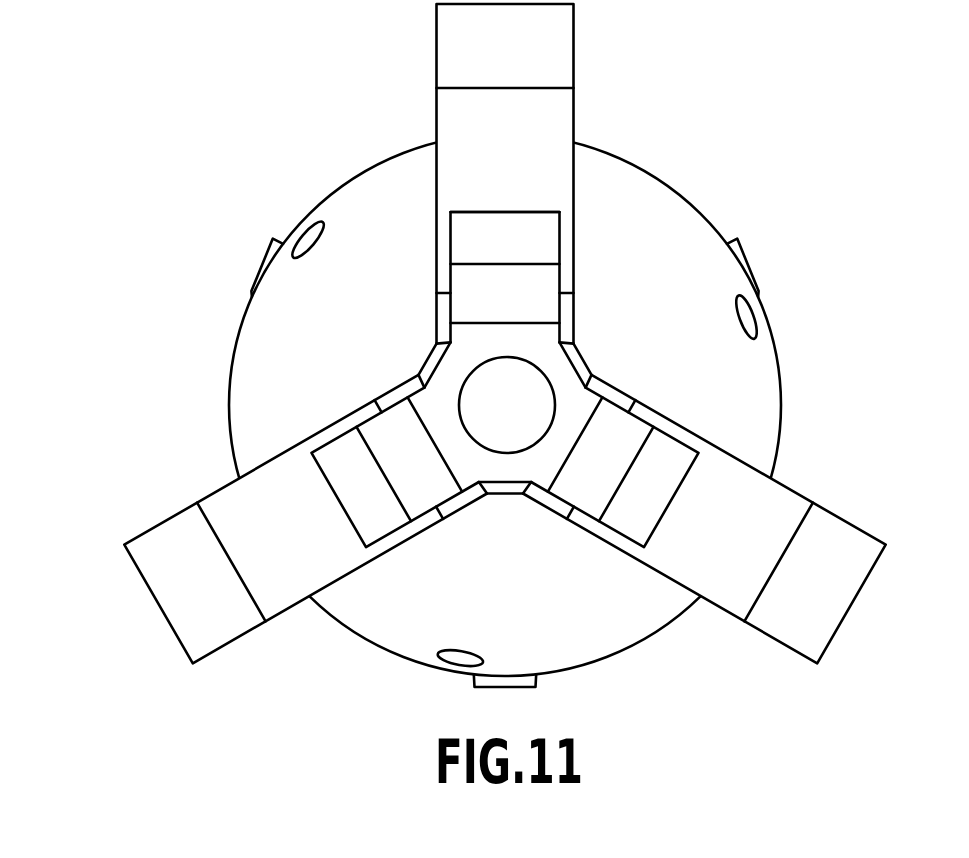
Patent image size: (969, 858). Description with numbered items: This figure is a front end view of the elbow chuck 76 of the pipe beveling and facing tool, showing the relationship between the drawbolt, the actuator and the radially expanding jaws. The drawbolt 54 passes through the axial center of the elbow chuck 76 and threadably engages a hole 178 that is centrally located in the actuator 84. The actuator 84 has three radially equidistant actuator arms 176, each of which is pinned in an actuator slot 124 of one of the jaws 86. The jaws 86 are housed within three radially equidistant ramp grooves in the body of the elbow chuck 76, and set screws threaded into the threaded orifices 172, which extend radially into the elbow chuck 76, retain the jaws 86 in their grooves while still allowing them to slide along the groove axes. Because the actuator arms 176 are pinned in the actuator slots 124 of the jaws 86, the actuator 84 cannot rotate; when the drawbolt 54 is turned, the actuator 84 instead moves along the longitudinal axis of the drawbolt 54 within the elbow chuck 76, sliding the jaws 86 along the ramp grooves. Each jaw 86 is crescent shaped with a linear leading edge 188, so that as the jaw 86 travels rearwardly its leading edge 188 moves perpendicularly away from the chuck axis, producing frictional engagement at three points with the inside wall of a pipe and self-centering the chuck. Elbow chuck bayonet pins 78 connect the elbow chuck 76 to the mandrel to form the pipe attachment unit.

The elbow chuck 76 is at (702, 126).
The elbow chuck bayonet pins 78 is at (755, 258).
The threaded orifice 172 is at (304, 233).
The actuator arms 176 is at (540, 283).
The drawbolt 54 is at (486, 389).
The actuator 84 is at (557, 369).
The jaws 86 is at (778, 502).
The threaded hole 178 is at (462, 417).
The actuator slots 124 is at (633, 520).
The leading edge 188 is at (156, 607).